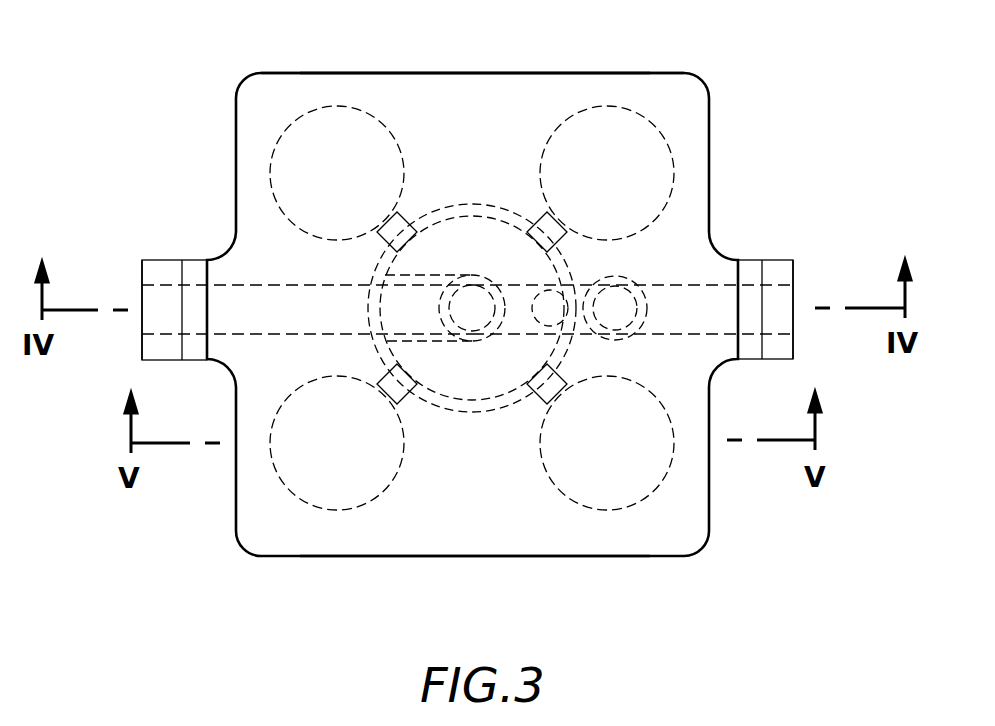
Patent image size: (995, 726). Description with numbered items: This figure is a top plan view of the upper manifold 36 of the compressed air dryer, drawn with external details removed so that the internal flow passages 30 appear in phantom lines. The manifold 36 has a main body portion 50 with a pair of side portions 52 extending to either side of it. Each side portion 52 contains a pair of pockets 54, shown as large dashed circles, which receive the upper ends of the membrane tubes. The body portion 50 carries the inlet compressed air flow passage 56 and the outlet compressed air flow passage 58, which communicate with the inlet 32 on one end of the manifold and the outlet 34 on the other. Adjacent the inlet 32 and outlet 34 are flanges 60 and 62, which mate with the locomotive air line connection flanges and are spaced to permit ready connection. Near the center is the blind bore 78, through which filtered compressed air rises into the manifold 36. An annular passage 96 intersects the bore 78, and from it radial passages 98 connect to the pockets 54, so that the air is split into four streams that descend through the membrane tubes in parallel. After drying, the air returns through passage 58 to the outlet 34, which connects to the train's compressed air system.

The flow passages 30 is at (457, 412).
The inlet 32 is at (142, 280).
The outlet 34 is at (793, 283).
The upper manifold 36 is at (365, 74).
The main body portion 50 is at (273, 252).
The side portions 52 is at (474, 74).
The pockets 54 is at (559, 126).
The inlet compressed air flow passage 56 is at (265, 335).
The outlet compressed air flow passage 58 is at (683, 335).
The flange 60 is at (196, 260).
The flange 62 is at (745, 260).
The blind bore 78 is at (547, 291).
The annular passage 96 is at (477, 204).
The radial passages 98 is at (380, 242).